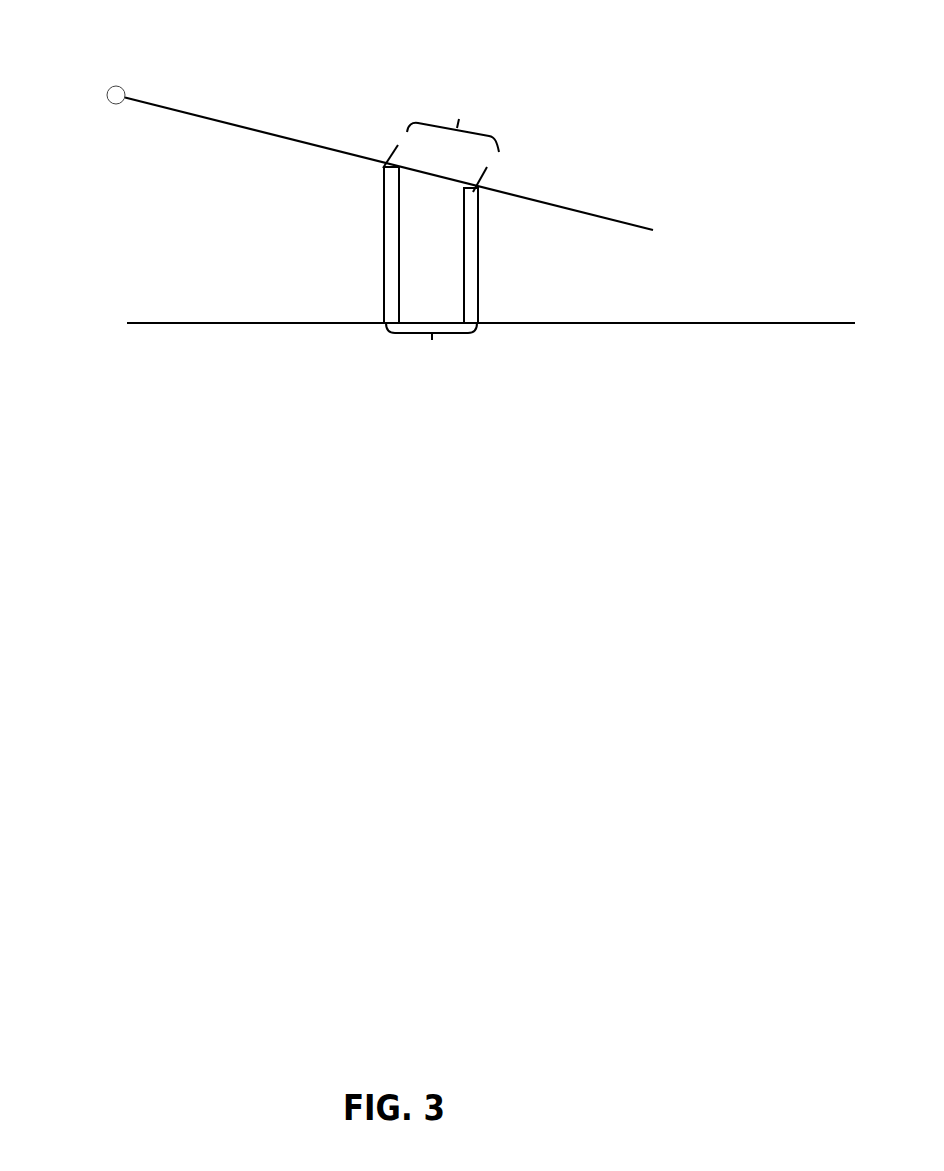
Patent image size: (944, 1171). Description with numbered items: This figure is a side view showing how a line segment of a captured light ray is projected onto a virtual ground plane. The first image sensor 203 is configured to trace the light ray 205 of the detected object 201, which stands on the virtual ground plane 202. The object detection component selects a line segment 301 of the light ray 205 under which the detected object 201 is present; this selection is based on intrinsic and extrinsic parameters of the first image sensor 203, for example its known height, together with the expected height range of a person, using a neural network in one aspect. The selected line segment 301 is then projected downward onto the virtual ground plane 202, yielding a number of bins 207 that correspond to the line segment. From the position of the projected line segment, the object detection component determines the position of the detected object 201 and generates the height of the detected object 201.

The detected object 201 is at (383, 244).
The virtual ground plane 202 is at (172, 322).
The first image sensor 203 is at (112, 85).
The light ray 205 is at (323, 137).
The bins 207 is at (431, 348).
The line segment 301 is at (453, 123).